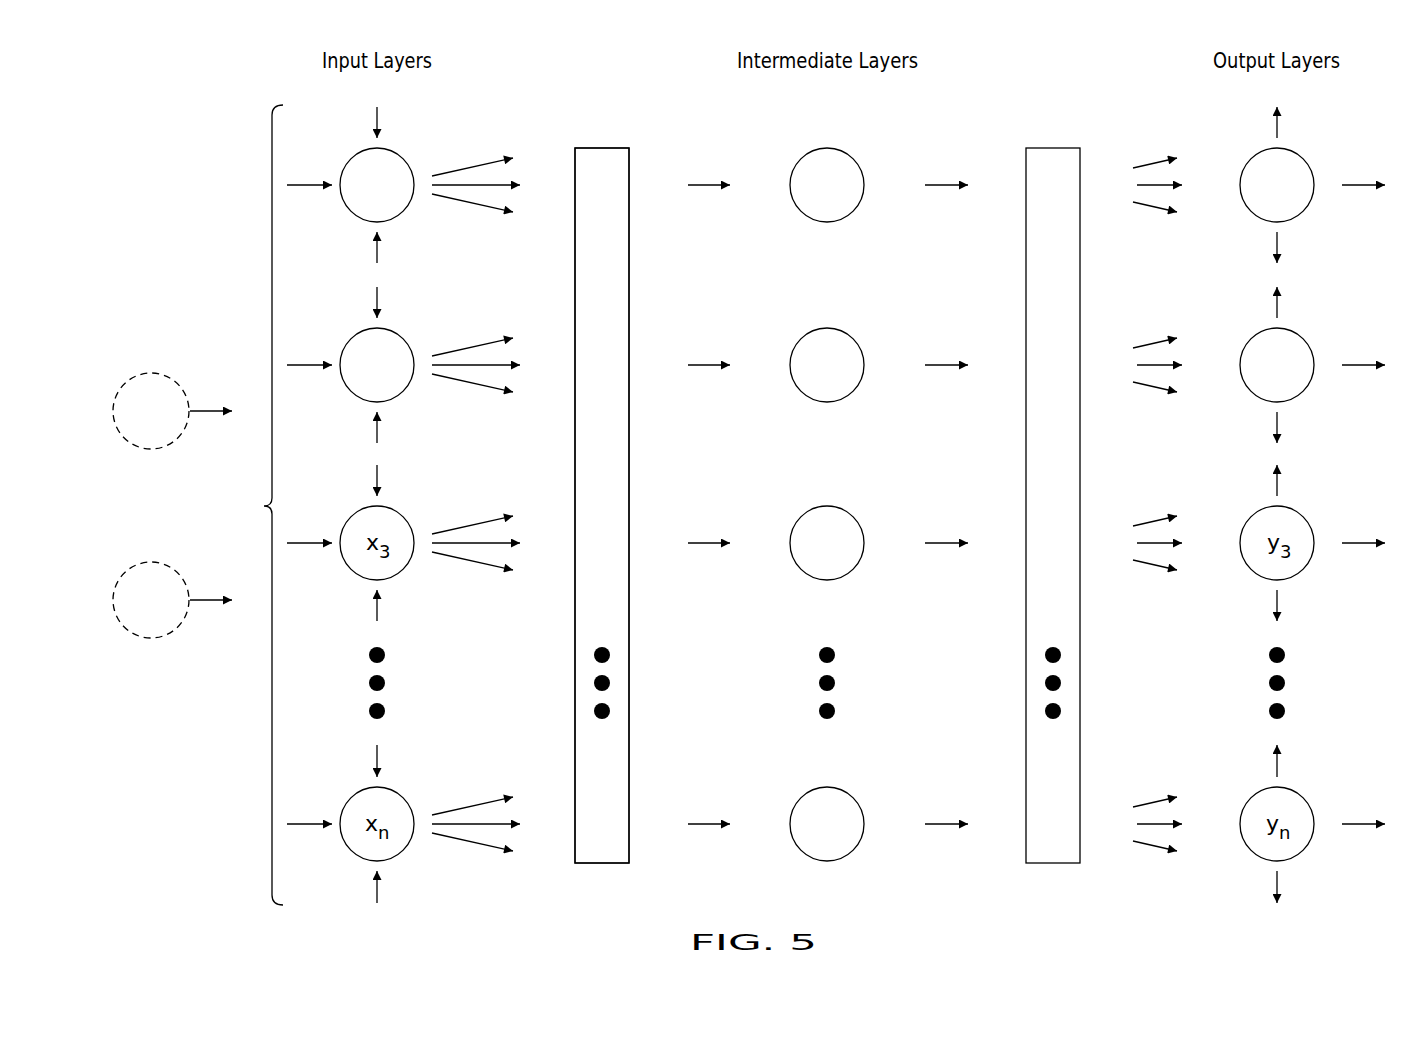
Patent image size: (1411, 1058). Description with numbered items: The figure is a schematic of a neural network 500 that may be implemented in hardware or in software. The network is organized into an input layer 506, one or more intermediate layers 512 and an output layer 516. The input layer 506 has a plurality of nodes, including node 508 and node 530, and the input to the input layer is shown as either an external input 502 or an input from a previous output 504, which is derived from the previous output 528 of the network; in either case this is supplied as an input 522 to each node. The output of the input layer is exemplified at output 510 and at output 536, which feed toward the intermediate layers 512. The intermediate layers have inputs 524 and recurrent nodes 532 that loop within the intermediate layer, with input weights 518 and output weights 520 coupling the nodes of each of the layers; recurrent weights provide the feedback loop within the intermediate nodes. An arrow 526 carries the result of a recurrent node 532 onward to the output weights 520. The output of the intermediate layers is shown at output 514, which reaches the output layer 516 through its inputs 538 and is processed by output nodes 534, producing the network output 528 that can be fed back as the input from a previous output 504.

The neural network 500 is at (157, 115).
The external input 502 is at (173, 381).
The input from a previous output 504 is at (173, 570).
The input layer 506 is at (253, 505).
The node 508 is at (415, 148).
The output of the input layer 510 is at (518, 148).
The intermediate layers 512 is at (575, 123).
The output of the intermediate layers 514 is at (1187, 148).
The output layer 516 is at (1328, 148).
The input weights 518 is at (629, 228).
The output weights 520 is at (1080, 228).
The input 522 is at (298, 545).
The inputs 524 is at (698, 545).
The arrow from intermediate node to activation layer 526 is at (935, 545).
The previous output 528 is at (1355, 545).
The node 530 is at (401, 338).
The recurrent node 532 is at (851, 338).
The node 534 is at (1301, 338).
The output of the input layer 536 is at (467, 561).
The input 538 is at (1145, 563).